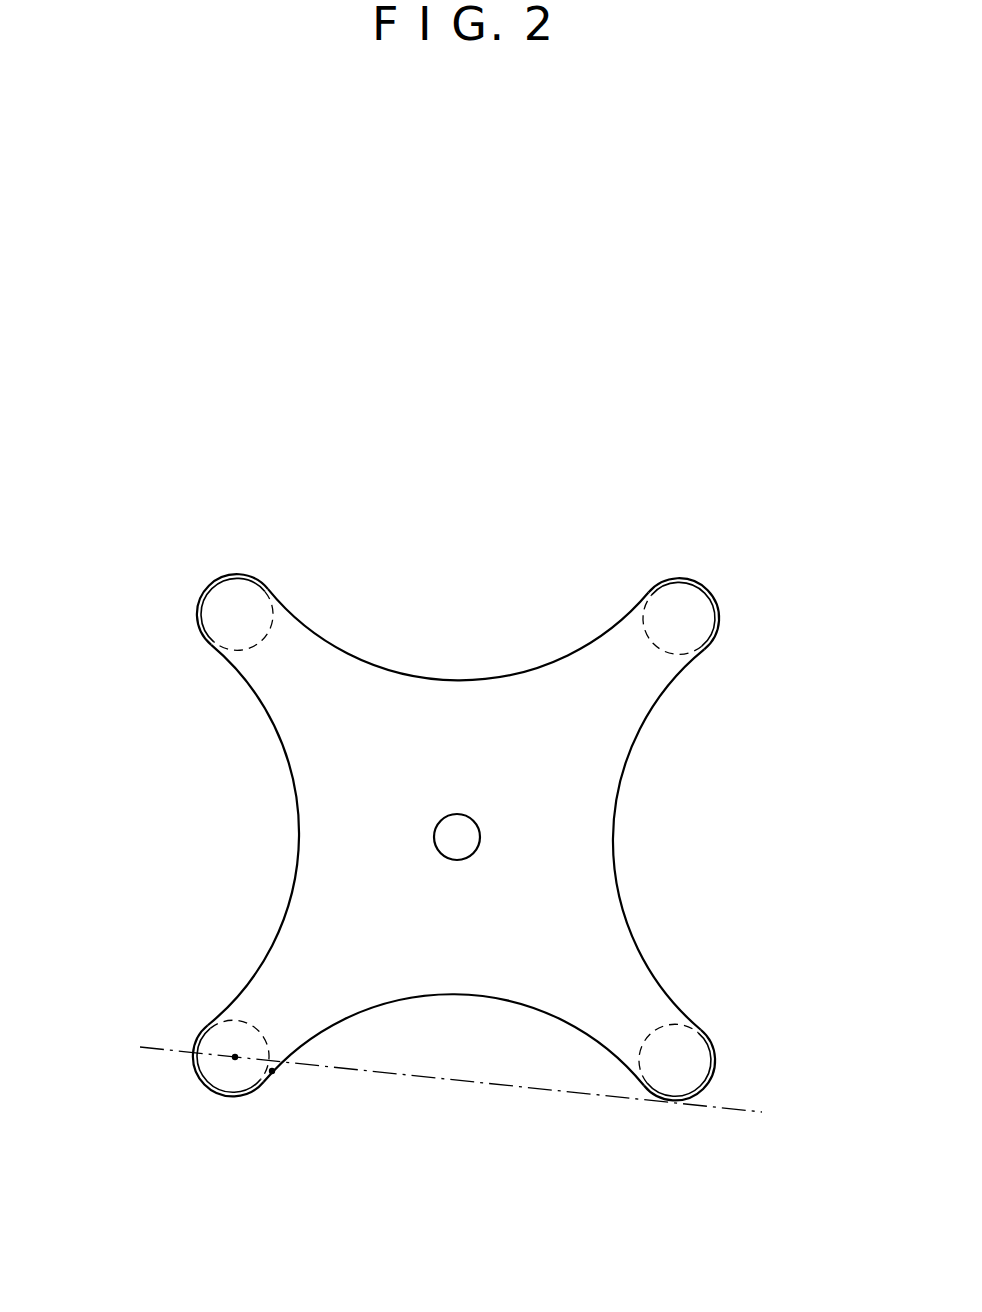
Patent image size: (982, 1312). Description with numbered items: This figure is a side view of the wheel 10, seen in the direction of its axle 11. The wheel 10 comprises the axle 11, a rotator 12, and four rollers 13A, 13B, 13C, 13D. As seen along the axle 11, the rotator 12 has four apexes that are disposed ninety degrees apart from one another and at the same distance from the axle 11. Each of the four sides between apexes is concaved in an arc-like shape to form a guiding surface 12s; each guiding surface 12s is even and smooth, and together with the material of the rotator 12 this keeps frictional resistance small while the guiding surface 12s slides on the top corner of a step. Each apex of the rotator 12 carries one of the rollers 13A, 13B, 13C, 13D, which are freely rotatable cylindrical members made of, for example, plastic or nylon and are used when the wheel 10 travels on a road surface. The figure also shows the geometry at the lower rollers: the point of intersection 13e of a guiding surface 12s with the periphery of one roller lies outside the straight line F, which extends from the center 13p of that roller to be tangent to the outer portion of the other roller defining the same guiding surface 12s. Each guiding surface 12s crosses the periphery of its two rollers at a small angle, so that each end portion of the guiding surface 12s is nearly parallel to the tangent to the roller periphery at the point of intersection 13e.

The wheel 10 is at (352, 522).
The axle 11 is at (455, 836).
The rotator 12 is at (537, 690).
The guiding surface 12s is at (430, 678).
The roller 13A is at (195, 1070).
The roller 13B is at (700, 1033).
The roller 13C is at (683, 577).
The roller 13D is at (238, 575).
The center of the roller 13p is at (235, 1057).
The point of intersection 13e is at (272, 1071).
The straight line F is at (155, 1048).